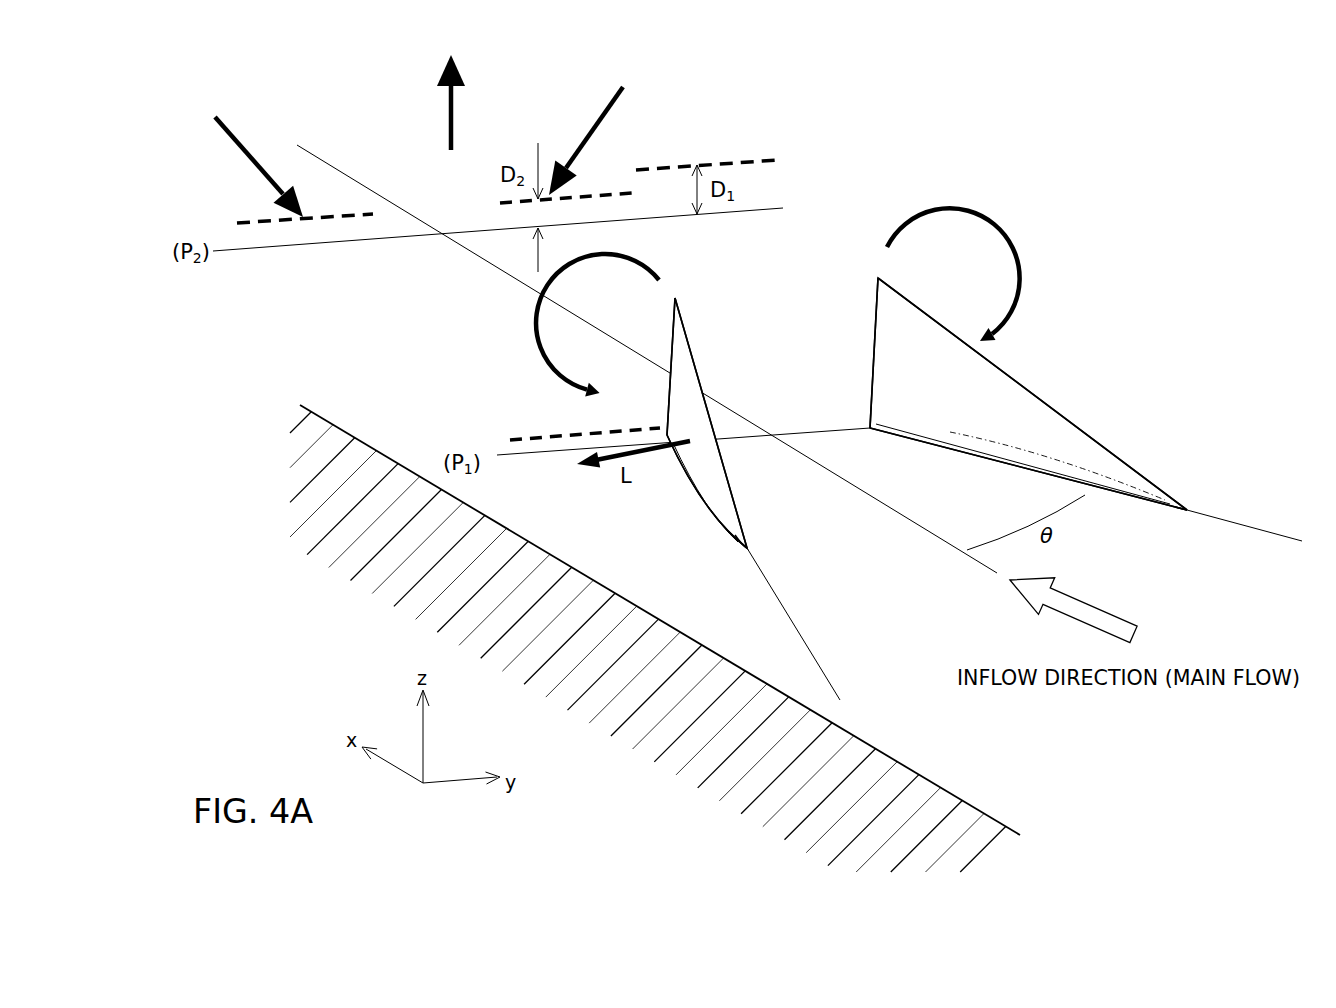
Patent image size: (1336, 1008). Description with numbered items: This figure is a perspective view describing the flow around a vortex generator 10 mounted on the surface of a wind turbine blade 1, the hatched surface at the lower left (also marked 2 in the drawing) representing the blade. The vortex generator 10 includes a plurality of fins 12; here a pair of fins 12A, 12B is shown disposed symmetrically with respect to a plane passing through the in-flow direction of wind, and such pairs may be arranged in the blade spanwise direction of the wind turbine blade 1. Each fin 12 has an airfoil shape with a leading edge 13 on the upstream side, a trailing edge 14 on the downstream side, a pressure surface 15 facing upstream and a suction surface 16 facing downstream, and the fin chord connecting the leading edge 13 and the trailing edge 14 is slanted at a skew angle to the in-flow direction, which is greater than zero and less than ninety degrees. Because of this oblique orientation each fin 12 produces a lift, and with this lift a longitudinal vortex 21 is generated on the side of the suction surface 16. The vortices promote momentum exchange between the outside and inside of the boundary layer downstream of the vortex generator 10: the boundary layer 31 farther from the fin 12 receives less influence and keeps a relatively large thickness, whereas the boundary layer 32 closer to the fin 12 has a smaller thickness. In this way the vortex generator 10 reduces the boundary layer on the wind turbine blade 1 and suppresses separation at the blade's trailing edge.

The wind turbine blade 1 is at (765, 657).
The main wing 2 is at (655, 638).
The vortex generator 10 is at (934, 387).
The fin 12 is at (934, 399).
The fin 12A is at (870, 313).
The fin 12B is at (695, 345).
The leading edge 13 is at (747, 553).
The trailing edge 14 is at (663, 403).
The pressure surface 15 is at (733, 483).
The suction surface 16 is at (687, 497).
The longitudinal vortex 21 is at (537, 327).
The boundary layer 31 is at (747, 158).
The boundary layer 32 is at (590, 193).